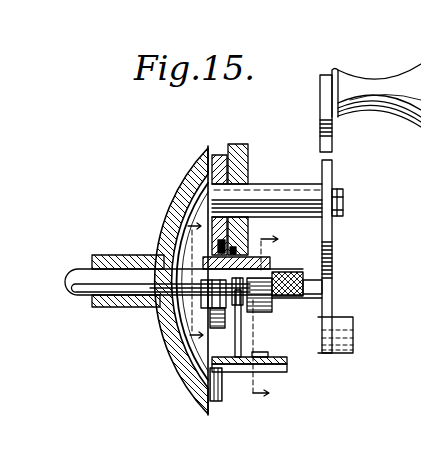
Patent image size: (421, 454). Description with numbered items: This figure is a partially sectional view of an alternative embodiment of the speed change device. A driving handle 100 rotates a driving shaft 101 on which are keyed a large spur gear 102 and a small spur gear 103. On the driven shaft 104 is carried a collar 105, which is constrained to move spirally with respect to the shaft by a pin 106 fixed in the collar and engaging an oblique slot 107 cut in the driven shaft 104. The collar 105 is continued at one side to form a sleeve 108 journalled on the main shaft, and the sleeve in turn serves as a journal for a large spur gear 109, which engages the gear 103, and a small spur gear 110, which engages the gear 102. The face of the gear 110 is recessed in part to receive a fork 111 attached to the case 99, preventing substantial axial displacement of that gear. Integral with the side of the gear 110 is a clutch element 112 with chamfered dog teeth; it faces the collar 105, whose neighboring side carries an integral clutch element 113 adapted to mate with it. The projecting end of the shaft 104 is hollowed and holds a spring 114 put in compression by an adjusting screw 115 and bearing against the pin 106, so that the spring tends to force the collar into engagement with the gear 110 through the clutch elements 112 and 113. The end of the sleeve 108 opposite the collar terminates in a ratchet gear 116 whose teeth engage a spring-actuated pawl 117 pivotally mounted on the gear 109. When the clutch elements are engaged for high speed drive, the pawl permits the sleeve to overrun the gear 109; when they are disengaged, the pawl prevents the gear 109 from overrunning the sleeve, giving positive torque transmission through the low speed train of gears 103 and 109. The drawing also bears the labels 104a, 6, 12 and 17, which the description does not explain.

The case 99 is at (216, 401).
The driving handle 100 is at (331, 167).
The driving shaft 101 is at (290, 184).
The large spur gear 102 is at (240, 144).
The small spur gear 103 is at (218, 153).
The driven shaft 104 is at (84, 297).
The inner rod 104a is at (106, 308).
The collar 105 is at (274, 261).
The pin 106 is at (271, 271).
The oblique slot 107 is at (205, 284).
The sleeve 108 is at (160, 241).
The large spur gear 109 is at (196, 378).
The small spur gear 110 is at (238, 316).
The fork 111 is at (237, 341).
The clutch element 112 is at (203, 322).
The clutch element 113 is at (300, 299).
The spring 114 is at (328, 268).
The adjusting screw 115 is at (305, 290).
The ratchet gear 116 is at (159, 312).
The pawl 117 is at (166, 222).
The section line 6- 6 is at (195, 282).
The section line 12- 12 is at (270, 247).
The section line 17- 17 is at (260, 358).